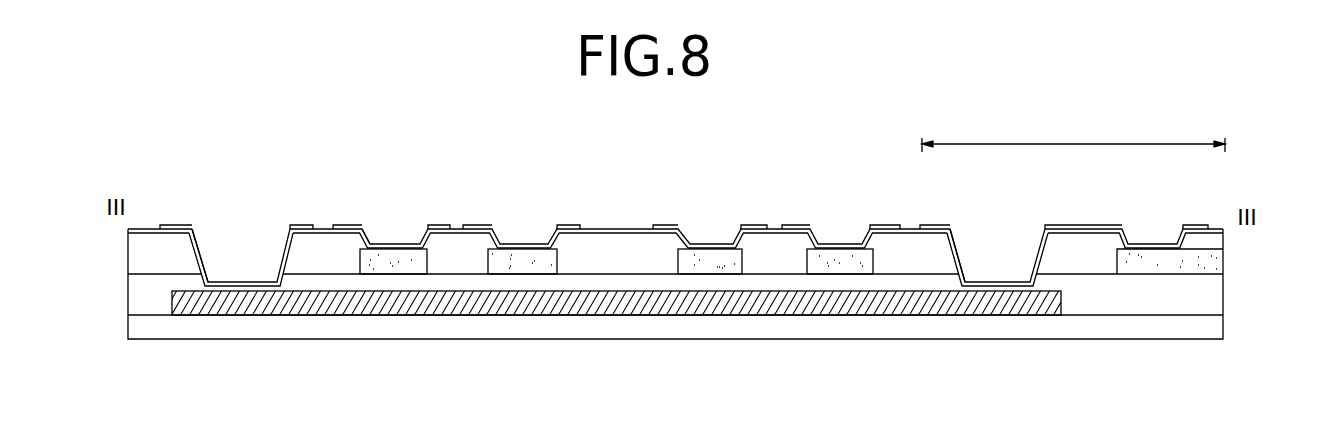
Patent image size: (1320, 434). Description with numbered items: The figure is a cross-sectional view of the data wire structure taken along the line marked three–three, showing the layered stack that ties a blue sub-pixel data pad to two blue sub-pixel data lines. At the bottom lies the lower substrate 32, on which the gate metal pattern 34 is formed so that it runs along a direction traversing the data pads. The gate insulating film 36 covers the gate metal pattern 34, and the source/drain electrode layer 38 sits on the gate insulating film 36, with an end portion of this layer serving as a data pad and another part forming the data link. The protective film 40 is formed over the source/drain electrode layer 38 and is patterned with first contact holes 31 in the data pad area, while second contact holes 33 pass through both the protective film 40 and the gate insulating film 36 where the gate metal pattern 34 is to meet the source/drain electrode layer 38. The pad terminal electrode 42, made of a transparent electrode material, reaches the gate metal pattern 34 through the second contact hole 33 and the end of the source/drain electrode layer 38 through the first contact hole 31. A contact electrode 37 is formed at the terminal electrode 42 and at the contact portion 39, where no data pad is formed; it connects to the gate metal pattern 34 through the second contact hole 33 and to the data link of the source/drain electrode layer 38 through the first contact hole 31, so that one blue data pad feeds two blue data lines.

The first contact hole 31 is at (517, 232).
The lower substrate 32 is at (1215, 324).
The second contact hole 33 is at (250, 260).
The gate metal pattern 34 is at (465, 316).
The gate insulating film 36 is at (1215, 293).
The contact electrode 37 is at (953, 228).
The source/drain electrode layer 38 is at (397, 253).
The contact portion 39 is at (1073, 135).
The protective film 40 is at (1213, 256).
The pad terminal electrode 42 is at (200, 250).